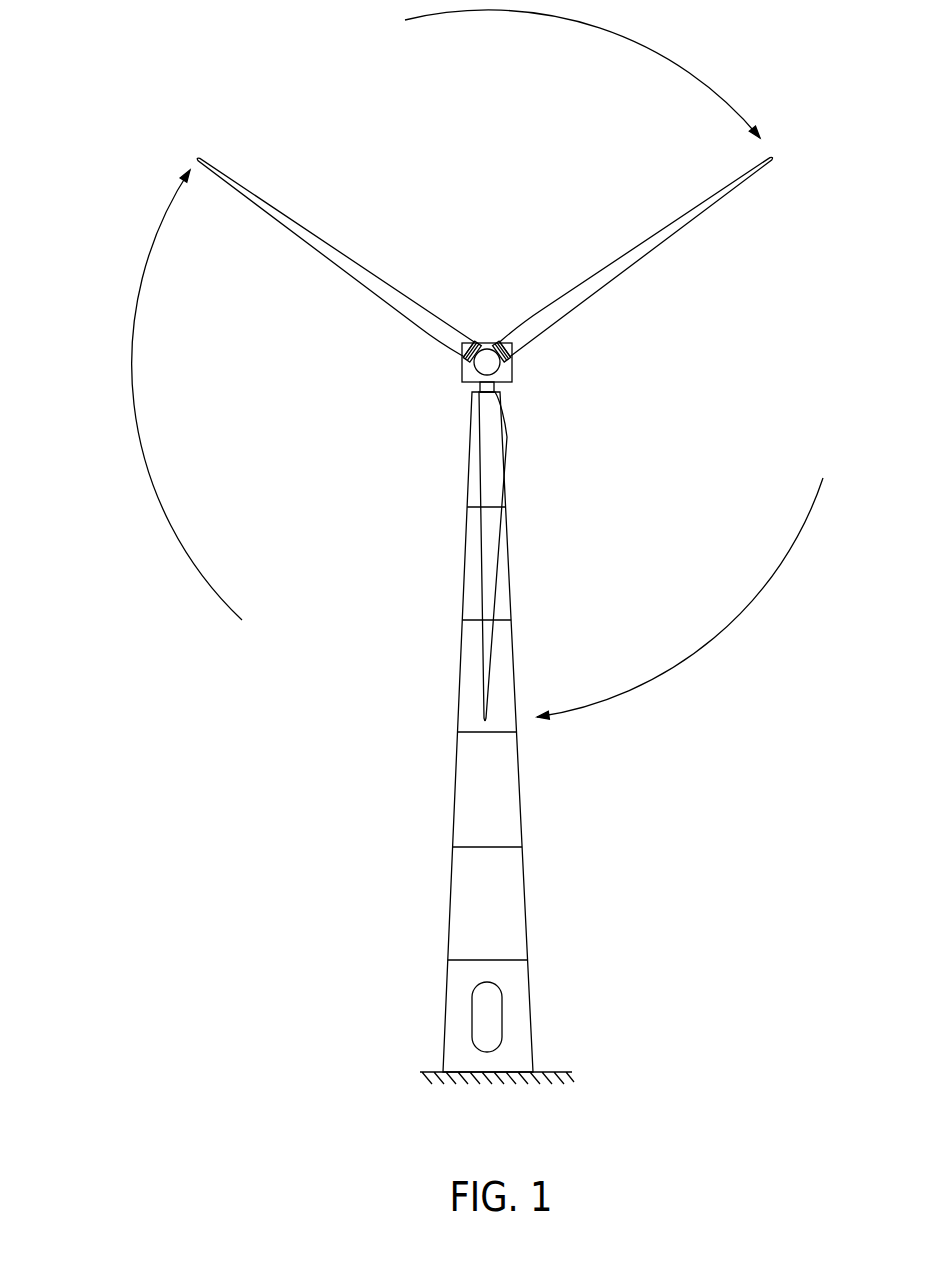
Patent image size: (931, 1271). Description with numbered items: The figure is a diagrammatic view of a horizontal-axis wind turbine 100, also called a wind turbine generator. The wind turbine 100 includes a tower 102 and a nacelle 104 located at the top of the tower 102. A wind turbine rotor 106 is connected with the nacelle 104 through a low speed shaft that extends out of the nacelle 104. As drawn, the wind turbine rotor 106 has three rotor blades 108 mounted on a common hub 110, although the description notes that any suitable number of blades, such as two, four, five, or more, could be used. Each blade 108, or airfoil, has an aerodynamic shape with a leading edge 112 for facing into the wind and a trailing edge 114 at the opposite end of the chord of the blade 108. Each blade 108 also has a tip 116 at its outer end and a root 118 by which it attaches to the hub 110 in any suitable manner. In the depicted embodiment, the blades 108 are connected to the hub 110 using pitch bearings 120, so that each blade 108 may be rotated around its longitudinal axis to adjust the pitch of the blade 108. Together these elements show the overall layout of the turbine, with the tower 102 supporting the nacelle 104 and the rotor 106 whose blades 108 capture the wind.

The wind turbine 100 is at (447, 547).
The tower 102 is at (460, 803).
The nacelle 104 is at (458, 383).
The wind turbine rotor 106 is at (548, 366).
The rotor blade 108 is at (378, 292).
The hub 110 is at (488, 362).
The leading edge 112 is at (308, 228).
The trailing edge 114 is at (313, 256).
The tip 116 is at (188, 146).
The root 118 is at (440, 363).
The pitch bearing 120 is at (457, 340).